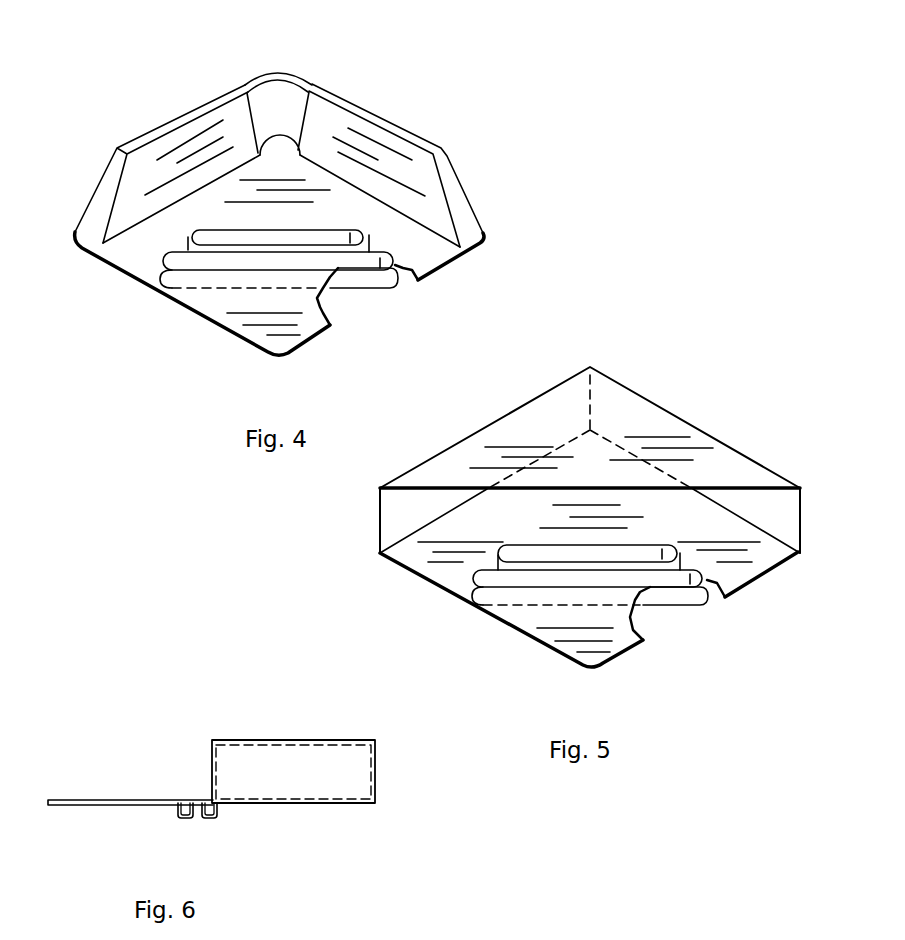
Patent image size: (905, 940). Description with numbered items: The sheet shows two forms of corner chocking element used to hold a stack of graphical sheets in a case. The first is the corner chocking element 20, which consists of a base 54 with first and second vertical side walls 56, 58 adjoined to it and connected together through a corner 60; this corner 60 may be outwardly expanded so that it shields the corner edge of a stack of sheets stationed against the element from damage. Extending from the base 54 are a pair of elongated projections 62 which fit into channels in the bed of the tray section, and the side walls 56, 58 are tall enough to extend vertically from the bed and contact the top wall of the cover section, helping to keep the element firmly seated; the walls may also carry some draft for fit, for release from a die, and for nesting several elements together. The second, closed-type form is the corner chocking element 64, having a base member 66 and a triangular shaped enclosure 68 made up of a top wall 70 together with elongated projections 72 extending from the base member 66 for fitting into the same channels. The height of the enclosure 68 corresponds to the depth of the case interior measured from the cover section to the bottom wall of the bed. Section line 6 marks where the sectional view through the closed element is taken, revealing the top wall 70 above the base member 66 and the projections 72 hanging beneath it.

In FIG. 4, the corner chocking element 20 is at (407, 107).
In FIG. 4, the base 54 is at (138, 277).
In FIG. 4, the first vertical side wall 56 is at (97, 185).
In FIG. 4, the second vertical side wall 58 is at (465, 192).
In FIG. 4, the corner 60 is at (285, 73).
In FIG. 4, the elongated projections 62 is at (365, 290).
In FIG. 5, the corner chocking element 64 is at (637, 392).
In FIG. 5, the base member 66 is at (413, 557).
In FIG. 6, the base member 66 is at (110, 807).
In FIG. 5, the triangular shaped enclosure 68 is at (422, 508).
In FIG. 5, the top wall 70 is at (552, 413).
In FIG. 6, the top wall 70 is at (283, 742).
In FIG. 5, the elongated projections 72 is at (677, 605).
In FIG. 6, the elongated projections 72 is at (217, 817).
In FIG. 5, the section line 6— 6 is at (845, 385).